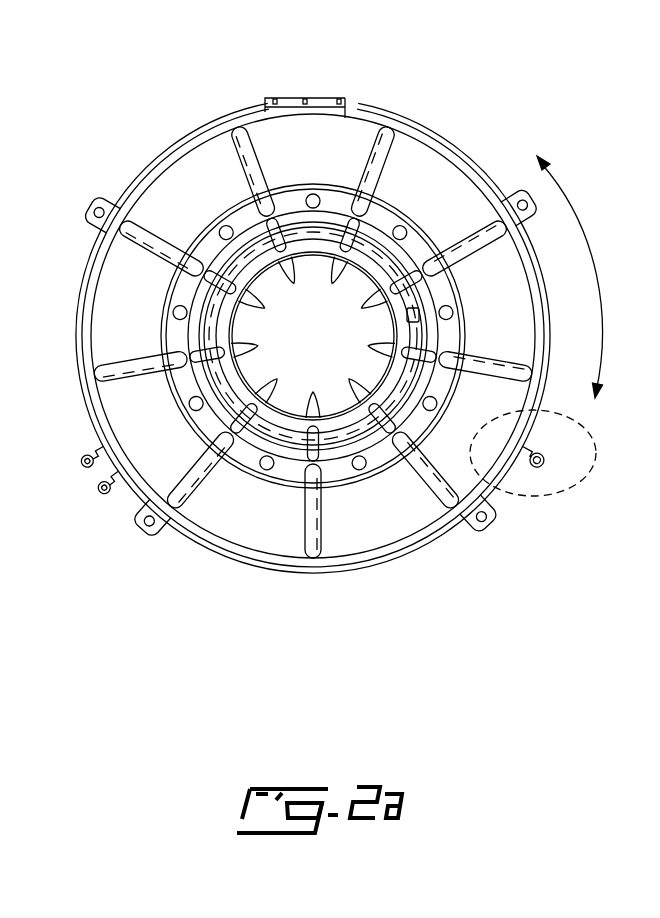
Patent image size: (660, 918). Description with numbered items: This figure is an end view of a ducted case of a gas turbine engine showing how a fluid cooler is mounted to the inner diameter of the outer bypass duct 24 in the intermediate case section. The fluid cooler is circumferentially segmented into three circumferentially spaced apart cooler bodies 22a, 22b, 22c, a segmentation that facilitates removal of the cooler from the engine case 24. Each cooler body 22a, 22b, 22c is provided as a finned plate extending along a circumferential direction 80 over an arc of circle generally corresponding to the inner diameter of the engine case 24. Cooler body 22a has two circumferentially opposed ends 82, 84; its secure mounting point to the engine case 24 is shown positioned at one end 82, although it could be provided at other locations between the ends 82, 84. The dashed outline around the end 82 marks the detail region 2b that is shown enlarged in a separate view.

The cooler body 22a is at (452, 162).
The cooler body 22b is at (183, 161).
The cooler body 22c is at (234, 549).
The outer bypass duct 24 is at (321, 96).
The end of cooler body 84 is at (356, 99).
The circumferential direction 80 is at (584, 277).
The end of cooler body 82 is at (537, 427).
The detail view reference 2b is at (543, 497).